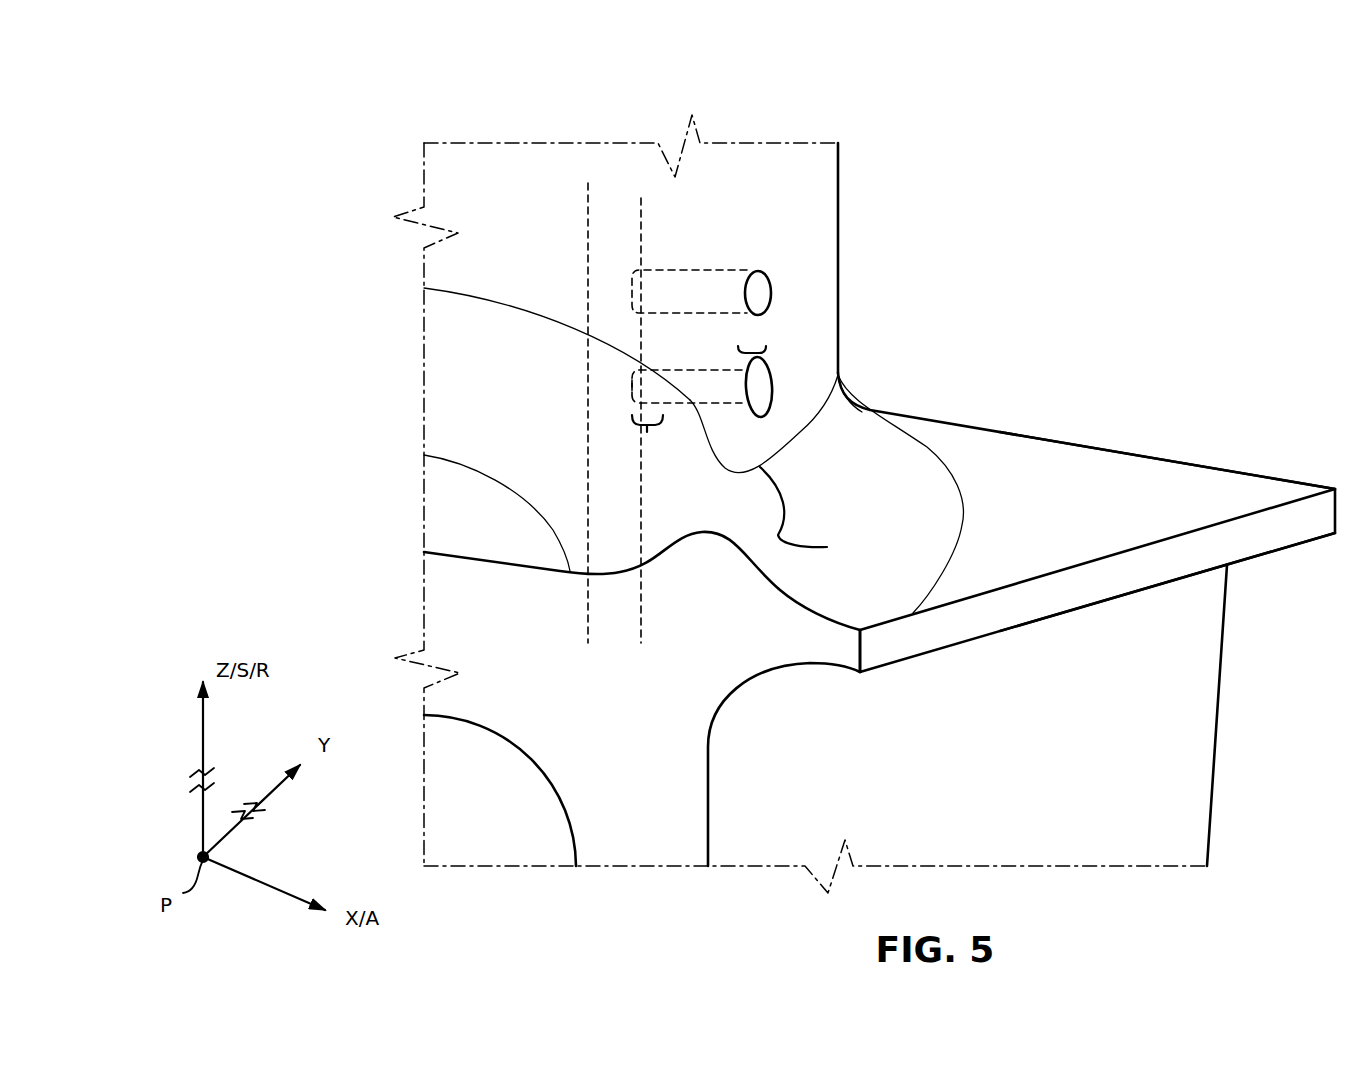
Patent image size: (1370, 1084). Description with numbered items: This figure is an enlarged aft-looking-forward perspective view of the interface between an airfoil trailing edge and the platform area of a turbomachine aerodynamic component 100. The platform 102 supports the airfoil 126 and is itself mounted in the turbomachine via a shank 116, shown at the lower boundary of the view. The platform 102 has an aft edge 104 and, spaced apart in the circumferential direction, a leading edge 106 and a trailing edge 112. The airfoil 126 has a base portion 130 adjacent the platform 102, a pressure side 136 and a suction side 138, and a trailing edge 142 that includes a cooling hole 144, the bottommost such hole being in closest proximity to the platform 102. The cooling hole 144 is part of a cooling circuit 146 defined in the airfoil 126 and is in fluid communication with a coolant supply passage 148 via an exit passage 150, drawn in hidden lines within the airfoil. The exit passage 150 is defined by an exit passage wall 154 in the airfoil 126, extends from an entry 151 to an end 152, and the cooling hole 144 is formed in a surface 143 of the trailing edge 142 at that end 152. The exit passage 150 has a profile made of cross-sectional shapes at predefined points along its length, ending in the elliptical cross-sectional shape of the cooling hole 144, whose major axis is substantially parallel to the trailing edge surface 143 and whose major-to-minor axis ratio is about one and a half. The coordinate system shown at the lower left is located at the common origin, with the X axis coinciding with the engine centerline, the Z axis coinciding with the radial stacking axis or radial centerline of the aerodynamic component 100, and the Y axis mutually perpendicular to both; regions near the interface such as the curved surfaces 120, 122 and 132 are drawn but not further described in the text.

The turbomachine aerodynamic component 100 is at (452, 98).
The platform 102 is at (1015, 476).
The aft edge 104 is at (1170, 558).
The leading edge 106 is at (1228, 468).
The trailing edge 112 is at (488, 621).
The shank 116 is at (793, 808).
The left arcuate surface 120 is at (512, 820).
The right arcuate surface 122 is at (670, 847).
The airfoil 126 is at (613, 205).
The base portion 130 is at (850, 427).
The inner curved surface 132 is at (487, 380).
The pressure side 136 is at (481, 217).
The suction side 138 is at (838, 195).
The trailing edge 142 is at (817, 513).
The surface 143 is at (778, 432).
The cooling hole 144 is at (742, 383).
The cooling circuit 146 is at (562, 248).
The coolant supply passage 148 is at (590, 350).
The exit passage 150 is at (685, 403).
The entry 151 is at (647, 432).
The end 152 is at (752, 347).
The exit passage wall 154 is at (656, 383).